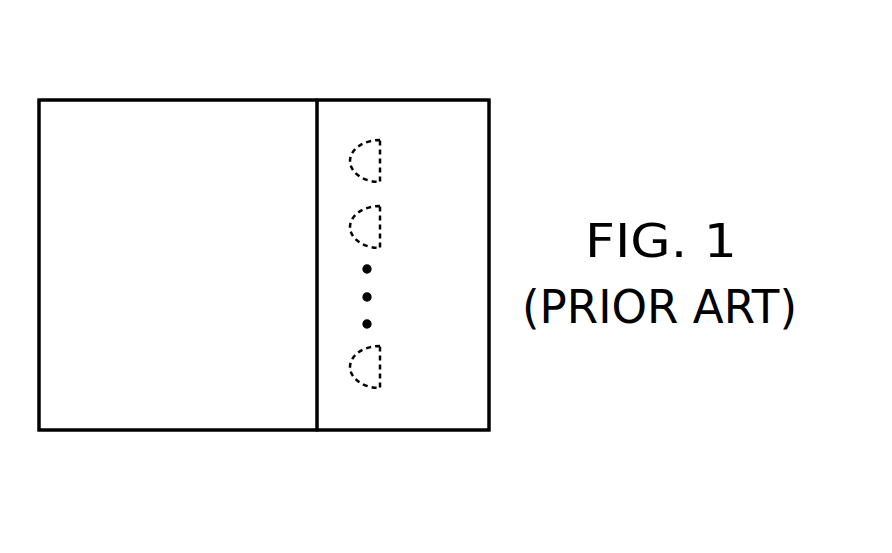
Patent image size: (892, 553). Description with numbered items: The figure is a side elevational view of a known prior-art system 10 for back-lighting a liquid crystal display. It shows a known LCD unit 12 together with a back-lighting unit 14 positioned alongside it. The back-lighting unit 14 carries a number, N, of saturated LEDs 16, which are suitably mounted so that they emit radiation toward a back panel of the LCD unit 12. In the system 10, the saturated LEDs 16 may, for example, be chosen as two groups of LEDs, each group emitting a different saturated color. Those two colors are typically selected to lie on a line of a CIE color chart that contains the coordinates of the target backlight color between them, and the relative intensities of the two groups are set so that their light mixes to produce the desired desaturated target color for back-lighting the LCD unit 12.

The system 10 is at (358, 62).
The LCD unit 12 is at (183, 431).
The back-lighting unit 14 is at (366, 431).
The saturated LEDs 16 is at (382, 161).